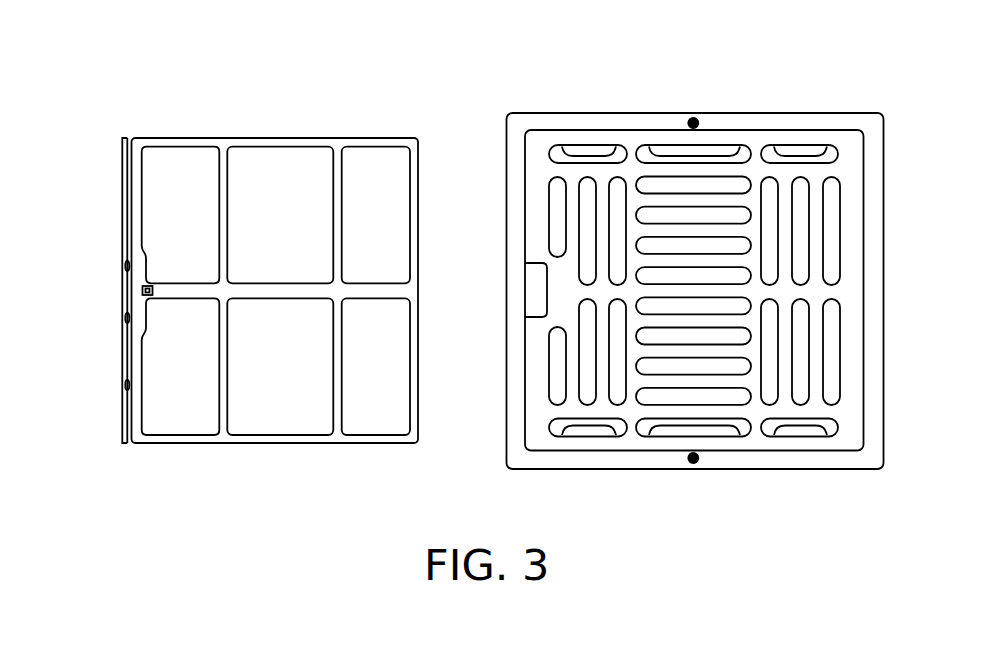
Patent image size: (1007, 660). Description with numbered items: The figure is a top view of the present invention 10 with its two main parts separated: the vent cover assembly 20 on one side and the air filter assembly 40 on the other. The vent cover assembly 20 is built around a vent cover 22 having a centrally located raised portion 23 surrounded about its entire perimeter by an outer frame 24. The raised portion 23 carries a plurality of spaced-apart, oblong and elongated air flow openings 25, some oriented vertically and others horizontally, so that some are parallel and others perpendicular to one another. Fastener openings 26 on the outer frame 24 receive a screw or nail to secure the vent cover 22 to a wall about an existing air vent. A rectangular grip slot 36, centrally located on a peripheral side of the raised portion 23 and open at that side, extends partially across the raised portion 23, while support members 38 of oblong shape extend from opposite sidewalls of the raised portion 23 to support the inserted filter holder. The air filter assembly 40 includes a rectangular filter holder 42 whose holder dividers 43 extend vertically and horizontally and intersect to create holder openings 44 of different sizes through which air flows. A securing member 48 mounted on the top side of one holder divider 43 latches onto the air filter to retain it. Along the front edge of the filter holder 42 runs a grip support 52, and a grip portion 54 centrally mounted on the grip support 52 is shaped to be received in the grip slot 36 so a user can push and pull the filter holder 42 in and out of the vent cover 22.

The present invention 10 is at (124, 59).
The vent cover assembly 20 is at (578, 106).
The vent cover 22 is at (715, 112).
The raised portion 23 is at (838, 170).
The outer frame 24 is at (818, 125).
The air flow openings 25 is at (800, 350).
The fastener opening 26 is at (693, 465).
The grip slot 36 is at (537, 288).
The support members 38 is at (803, 432).
The air filter assembly 40 is at (236, 132).
The filter holder 42 is at (369, 137).
The holder dividers 43 is at (223, 245).
The holder openings 44 is at (288, 167).
The securing member 48 is at (148, 286).
The grip support 52 is at (122, 386).
The grip portion 54 is at (122, 282).